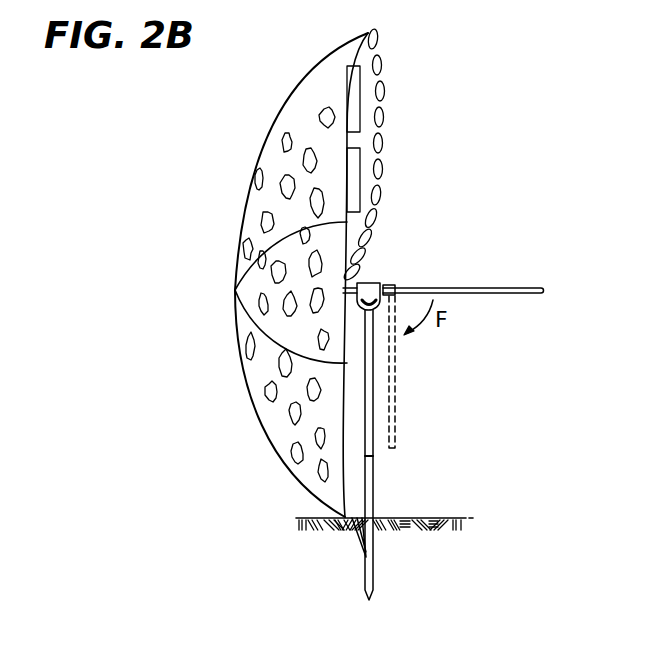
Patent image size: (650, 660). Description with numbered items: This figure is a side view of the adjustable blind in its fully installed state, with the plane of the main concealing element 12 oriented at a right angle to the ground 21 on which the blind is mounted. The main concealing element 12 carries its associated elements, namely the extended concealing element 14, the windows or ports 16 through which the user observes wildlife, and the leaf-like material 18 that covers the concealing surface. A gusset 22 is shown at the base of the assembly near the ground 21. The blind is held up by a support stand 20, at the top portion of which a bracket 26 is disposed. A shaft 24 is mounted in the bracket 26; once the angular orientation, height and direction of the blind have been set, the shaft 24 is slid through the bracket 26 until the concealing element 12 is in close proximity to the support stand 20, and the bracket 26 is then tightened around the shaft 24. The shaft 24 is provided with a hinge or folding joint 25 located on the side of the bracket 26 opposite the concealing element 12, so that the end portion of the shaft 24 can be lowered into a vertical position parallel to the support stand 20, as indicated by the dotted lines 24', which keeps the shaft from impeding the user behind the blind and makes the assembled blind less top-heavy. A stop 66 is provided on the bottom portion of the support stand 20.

The main concealing element 12 is at (252, 220).
The extended concealing element 14 is at (360, 62).
The windows or ports 16 is at (350, 163).
The leaf-like material 18 is at (382, 120).
The support stand 20 is at (373, 503).
The ground 21 is at (432, 517).
The gusset 22 is at (357, 541).
The shaft 24 is at (463, 270).
The lowered end portion of shaft (dotted lines) 24' is at (417, 372).
The hinge or folding joint 25 is at (396, 287).
The bracket 26 is at (373, 282).
The stop 66 is at (373, 458).